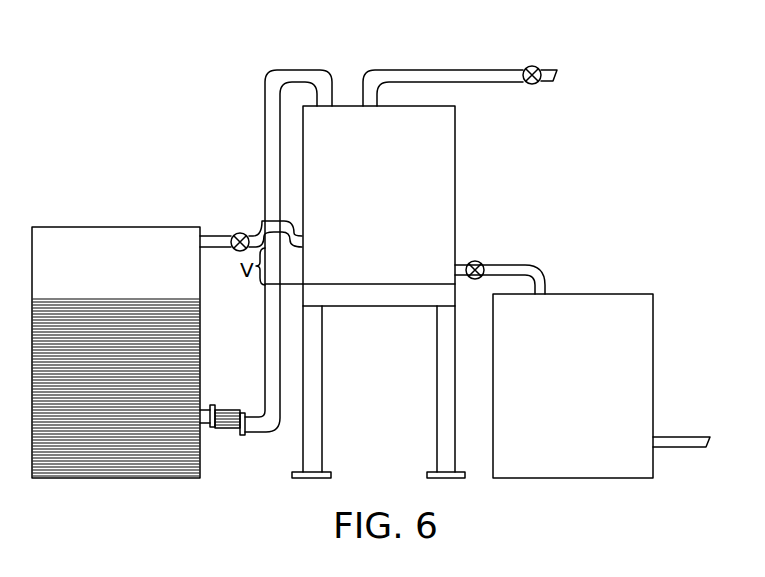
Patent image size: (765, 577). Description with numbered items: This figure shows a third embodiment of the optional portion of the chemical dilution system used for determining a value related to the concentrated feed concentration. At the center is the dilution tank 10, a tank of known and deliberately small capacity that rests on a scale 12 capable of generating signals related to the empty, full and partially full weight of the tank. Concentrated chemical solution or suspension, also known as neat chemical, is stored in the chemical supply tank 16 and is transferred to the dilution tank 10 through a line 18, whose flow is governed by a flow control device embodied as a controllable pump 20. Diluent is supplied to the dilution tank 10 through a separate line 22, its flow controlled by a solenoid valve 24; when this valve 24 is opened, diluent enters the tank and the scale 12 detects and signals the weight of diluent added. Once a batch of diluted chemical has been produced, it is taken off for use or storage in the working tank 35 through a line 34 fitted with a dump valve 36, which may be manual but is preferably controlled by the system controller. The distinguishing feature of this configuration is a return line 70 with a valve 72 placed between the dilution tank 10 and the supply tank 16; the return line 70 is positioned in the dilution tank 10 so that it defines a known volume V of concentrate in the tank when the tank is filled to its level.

The dilution tank 10 is at (455, 200).
The scale 12 is at (428, 293).
The chemical supply tank 16 is at (128, 228).
The line 18 is at (301, 68).
The controllable pump 20 is at (220, 428).
The line 22 is at (401, 69).
The solenoid valve 24 is at (531, 84).
The line 34 is at (546, 277).
The working tank 35 is at (633, 345).
The dump valve 36 is at (481, 262).
The return line 70 is at (265, 222).
The valve 72 is at (232, 236).